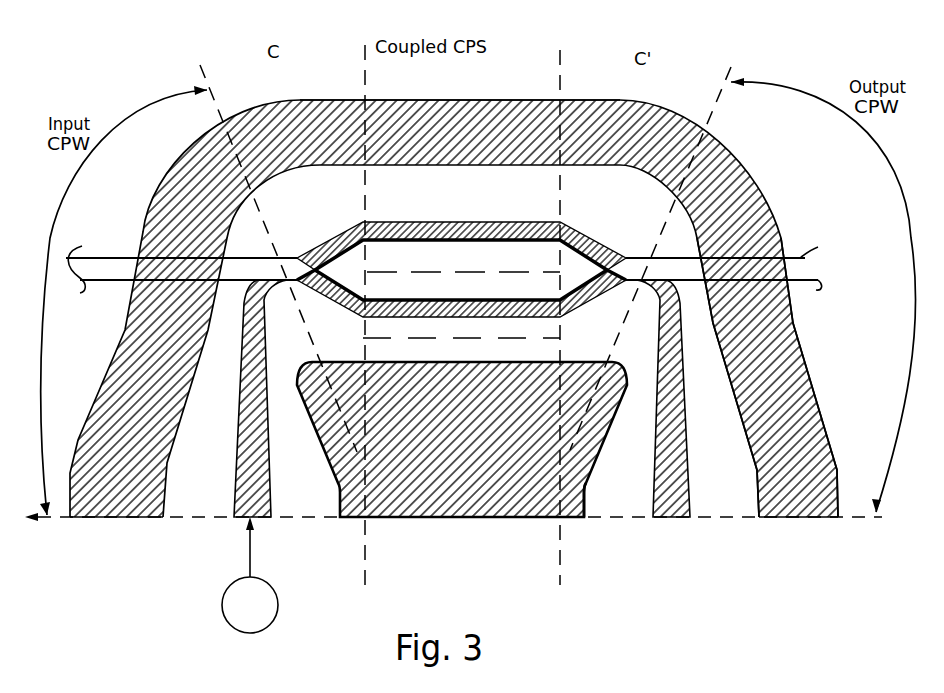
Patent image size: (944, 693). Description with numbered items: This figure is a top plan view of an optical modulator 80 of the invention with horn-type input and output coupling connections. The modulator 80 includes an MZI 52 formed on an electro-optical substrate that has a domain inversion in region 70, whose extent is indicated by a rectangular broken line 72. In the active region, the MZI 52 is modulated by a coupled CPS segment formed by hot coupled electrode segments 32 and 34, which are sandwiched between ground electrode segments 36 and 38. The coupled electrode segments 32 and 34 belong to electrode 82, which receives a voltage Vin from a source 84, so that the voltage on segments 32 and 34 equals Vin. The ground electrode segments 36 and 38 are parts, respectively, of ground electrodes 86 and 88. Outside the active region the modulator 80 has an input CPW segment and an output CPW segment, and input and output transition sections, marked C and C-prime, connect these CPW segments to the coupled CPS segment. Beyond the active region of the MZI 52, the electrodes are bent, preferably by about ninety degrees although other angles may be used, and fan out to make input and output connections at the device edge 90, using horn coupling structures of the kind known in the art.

The coupled electrode segment 32 is at (410, 222).
The coupled electrode segment 34 is at (385, 317).
The ground electrode segment 36 is at (404, 100).
The ground electrode segment 38 is at (412, 363).
The MZI 52 is at (655, 253).
The domain inversion region 70 is at (428, 291).
The rectangular broken line 72 is at (492, 349).
The modulator 80 is at (686, 47).
The electrode 82 is at (230, 486).
The source 84 is at (280, 597).
The ground electrode 86 is at (778, 227).
The ground electrode 88 is at (590, 487).
The device edge 90 is at (731, 545).